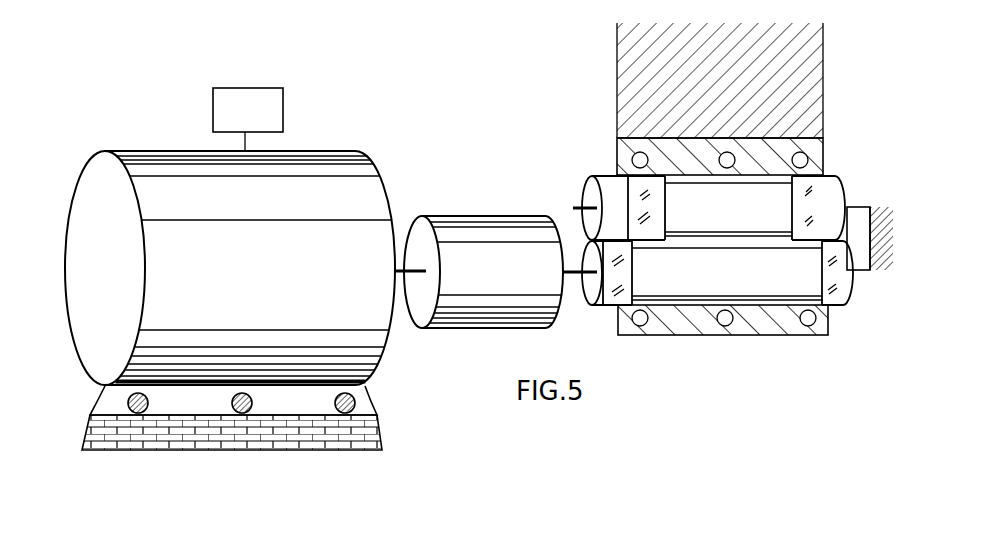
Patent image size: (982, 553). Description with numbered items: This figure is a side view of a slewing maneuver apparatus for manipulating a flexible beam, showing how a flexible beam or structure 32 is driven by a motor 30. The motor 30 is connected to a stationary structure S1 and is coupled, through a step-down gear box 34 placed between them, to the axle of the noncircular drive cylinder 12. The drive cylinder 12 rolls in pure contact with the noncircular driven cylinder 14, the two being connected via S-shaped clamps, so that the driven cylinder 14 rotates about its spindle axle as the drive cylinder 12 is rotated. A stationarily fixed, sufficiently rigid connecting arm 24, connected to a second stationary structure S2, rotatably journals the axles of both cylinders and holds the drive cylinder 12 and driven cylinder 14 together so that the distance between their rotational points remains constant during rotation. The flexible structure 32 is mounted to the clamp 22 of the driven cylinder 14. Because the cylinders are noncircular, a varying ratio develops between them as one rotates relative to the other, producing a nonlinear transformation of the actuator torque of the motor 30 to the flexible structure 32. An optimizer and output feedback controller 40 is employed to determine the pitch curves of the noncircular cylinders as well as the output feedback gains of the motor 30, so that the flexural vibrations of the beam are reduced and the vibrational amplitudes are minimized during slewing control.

The drive cylinder 12 is at (693, 280).
The driven cylinder 14 is at (699, 223).
The clamp 22 is at (749, 153).
The connecting arm 24 is at (743, 339).
The motor 30 is at (246, 279).
The flexible structure 32 is at (752, 80).
The step-down gear box 34 is at (476, 284).
The optimizer and output feedback controller 40 is at (233, 126).
The stationary structure S1 is at (232, 448).
The stationary structure S2 is at (871, 216).